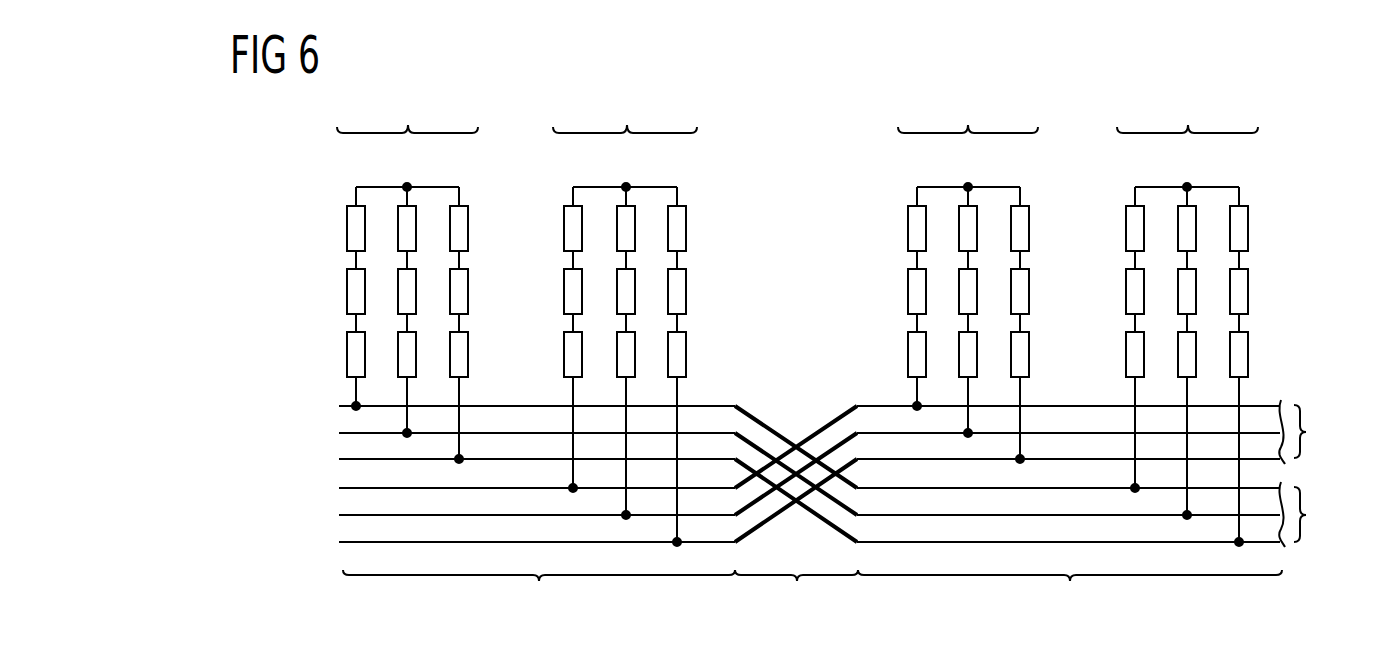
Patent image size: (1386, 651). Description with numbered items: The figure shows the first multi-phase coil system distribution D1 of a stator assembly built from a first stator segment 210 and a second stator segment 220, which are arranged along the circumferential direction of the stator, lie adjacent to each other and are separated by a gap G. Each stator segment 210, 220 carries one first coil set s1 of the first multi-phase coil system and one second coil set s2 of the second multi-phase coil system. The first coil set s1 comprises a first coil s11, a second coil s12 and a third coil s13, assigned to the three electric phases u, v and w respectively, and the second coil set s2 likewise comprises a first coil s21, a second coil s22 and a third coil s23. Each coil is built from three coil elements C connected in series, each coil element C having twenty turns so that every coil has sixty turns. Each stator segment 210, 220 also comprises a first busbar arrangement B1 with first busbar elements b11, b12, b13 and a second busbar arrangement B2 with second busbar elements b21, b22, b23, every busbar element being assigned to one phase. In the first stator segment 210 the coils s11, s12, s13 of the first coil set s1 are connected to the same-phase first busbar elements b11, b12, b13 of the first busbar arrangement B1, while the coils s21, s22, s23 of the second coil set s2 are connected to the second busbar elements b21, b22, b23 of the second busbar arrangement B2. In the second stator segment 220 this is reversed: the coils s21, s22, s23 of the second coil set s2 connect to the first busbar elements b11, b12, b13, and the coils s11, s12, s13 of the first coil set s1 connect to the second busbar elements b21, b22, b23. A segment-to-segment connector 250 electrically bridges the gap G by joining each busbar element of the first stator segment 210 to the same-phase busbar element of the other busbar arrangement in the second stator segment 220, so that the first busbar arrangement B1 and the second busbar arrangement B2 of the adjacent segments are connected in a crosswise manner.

The coil element C is at (322, 223).
The first multi-phase coil system distribution D1 is at (818, 178).
The first coil set s1 is at (797, 112).
The second coil set s2 is at (795, 112).
The first coil s11 is at (748, 319).
The second coil s12 is at (799, 333).
The third coil s13 is at (850, 346).
The first coil s21 is at (749, 319).
The second coil s22 is at (799, 333).
The third coil s23 is at (849, 346).
The first busbar phase element b11 is at (313, 406).
The second busbar phase element b12 is at (313, 433).
The third busbar phase element b13 is at (313, 459).
The first busbar phase element b21 is at (313, 488).
The second busbar phase element b22 is at (313, 515).
The third busbar phase element b23 is at (313, 542).
The first busbar arrangement B1 is at (1317, 431).
The second busbar arrangement B2 is at (1317, 514).
The segment-to-segment connector 250 is at (798, 386).
The first stator segment 210 is at (539, 596).
The second stator segment 220 is at (1070, 596).
The gap G is at (796, 596).